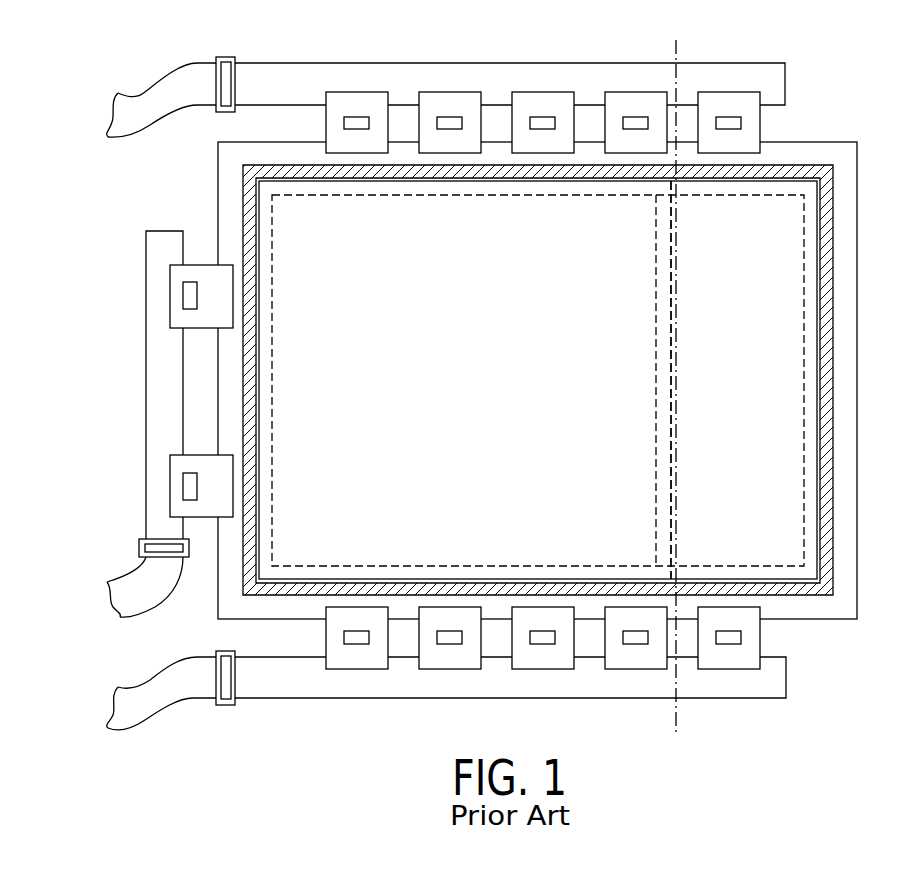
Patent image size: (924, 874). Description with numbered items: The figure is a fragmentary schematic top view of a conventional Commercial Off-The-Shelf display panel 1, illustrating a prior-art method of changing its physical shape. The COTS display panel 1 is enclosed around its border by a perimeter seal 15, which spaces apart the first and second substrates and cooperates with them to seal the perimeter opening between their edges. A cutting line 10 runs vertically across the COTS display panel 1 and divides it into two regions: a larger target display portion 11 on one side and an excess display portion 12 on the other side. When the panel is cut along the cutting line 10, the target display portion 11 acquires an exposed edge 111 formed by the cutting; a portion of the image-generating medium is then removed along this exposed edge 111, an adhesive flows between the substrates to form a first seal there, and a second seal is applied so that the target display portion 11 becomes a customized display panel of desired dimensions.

The COTS display panel 1 is at (818, 128).
The cutting line 10 is at (676, 708).
The target display portion 11 is at (472, 578).
The exposed edge 111 is at (669, 528).
The excess display portion 12 is at (788, 493).
The perimeter seal 15 is at (303, 583).